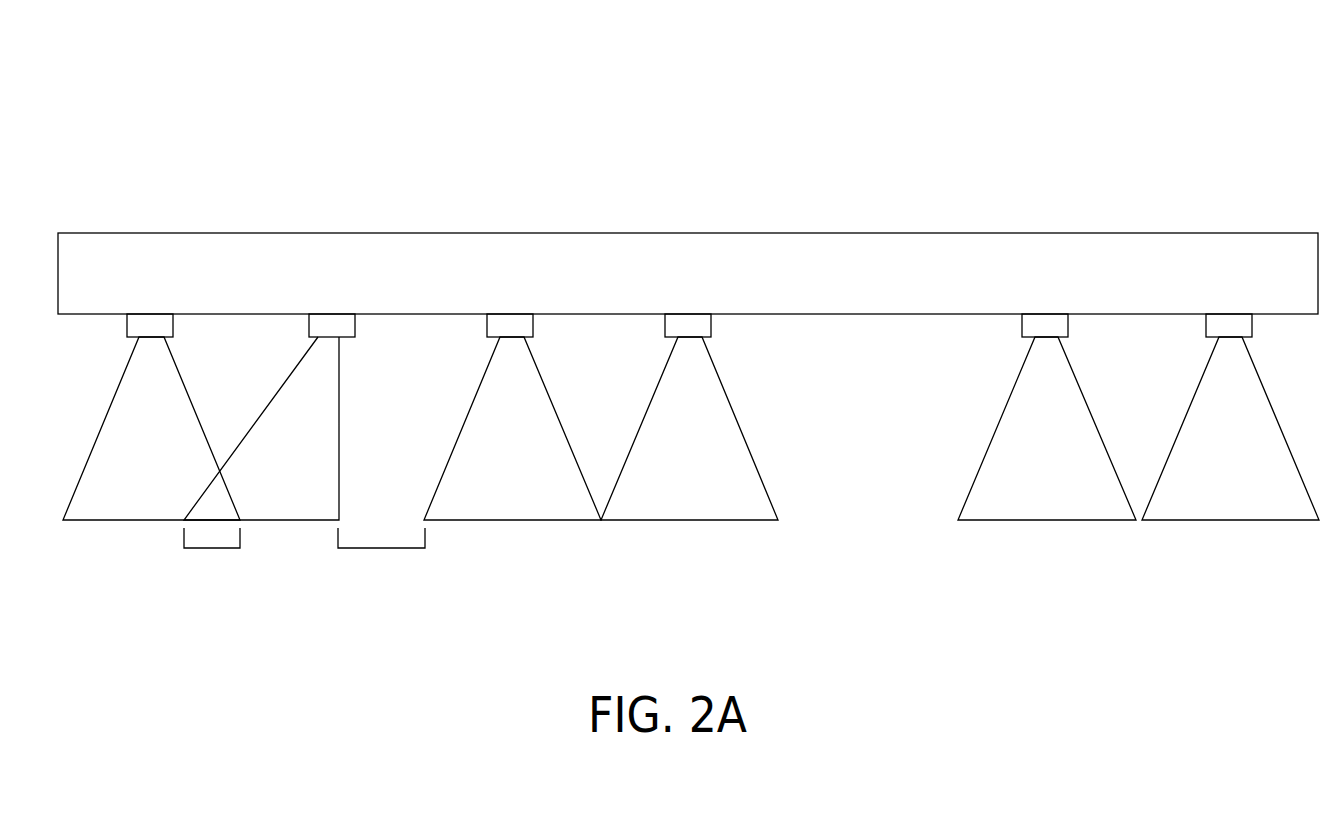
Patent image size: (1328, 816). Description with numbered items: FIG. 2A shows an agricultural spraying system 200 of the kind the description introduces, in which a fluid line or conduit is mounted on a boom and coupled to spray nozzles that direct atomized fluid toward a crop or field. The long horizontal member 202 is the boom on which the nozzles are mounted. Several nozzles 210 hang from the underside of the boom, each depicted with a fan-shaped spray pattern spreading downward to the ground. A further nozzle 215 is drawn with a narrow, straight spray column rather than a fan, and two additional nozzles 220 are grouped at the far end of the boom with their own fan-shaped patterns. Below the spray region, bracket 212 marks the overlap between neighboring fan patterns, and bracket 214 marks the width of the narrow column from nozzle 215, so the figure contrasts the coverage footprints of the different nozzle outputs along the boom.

The lighting system 200 is at (795, 70).
The mounting structure / housing 202 is at (57, 274).
The light sources with light cones 210 is at (152, 312).
The light source with collimated beam 215 is at (333, 327).
The light sources (second set) with light cones 220 is at (1233, 446).
The overlap width of adjacent light cones 212 is at (213, 548).
The width of collimated beam 214 is at (382, 548).